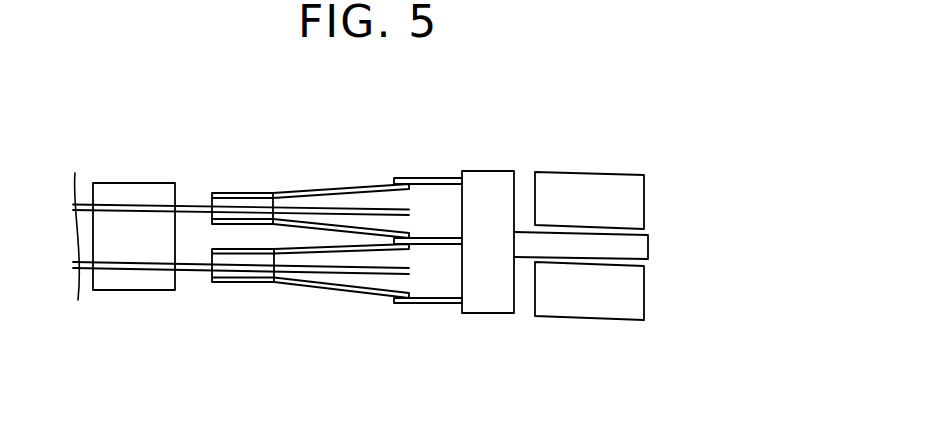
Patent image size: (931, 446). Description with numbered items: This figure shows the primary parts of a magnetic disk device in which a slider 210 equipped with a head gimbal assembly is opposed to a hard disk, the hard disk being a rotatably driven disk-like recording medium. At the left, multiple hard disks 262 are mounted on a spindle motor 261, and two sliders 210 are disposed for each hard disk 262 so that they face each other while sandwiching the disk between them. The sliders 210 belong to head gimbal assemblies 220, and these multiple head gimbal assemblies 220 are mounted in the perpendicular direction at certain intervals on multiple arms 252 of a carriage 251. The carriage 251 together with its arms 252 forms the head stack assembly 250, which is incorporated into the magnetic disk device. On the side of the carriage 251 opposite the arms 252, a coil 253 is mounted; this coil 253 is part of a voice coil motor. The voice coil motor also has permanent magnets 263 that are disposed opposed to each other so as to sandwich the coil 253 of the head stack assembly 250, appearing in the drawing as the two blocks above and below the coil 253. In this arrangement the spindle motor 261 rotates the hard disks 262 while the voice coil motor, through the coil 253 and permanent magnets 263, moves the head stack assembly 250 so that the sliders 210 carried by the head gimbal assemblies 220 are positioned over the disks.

The slider 210 is at (203, 200).
The head gimbal assembly 220 is at (325, 188).
The head stack assembly 250 is at (444, 200).
The carriage 251 is at (468, 170).
The arm 252 is at (407, 177).
The coil 253 is at (640, 245).
The spindle motor 261 is at (113, 192).
The hard disk 262 is at (187, 200).
The permanent magnet 263 is at (580, 173).